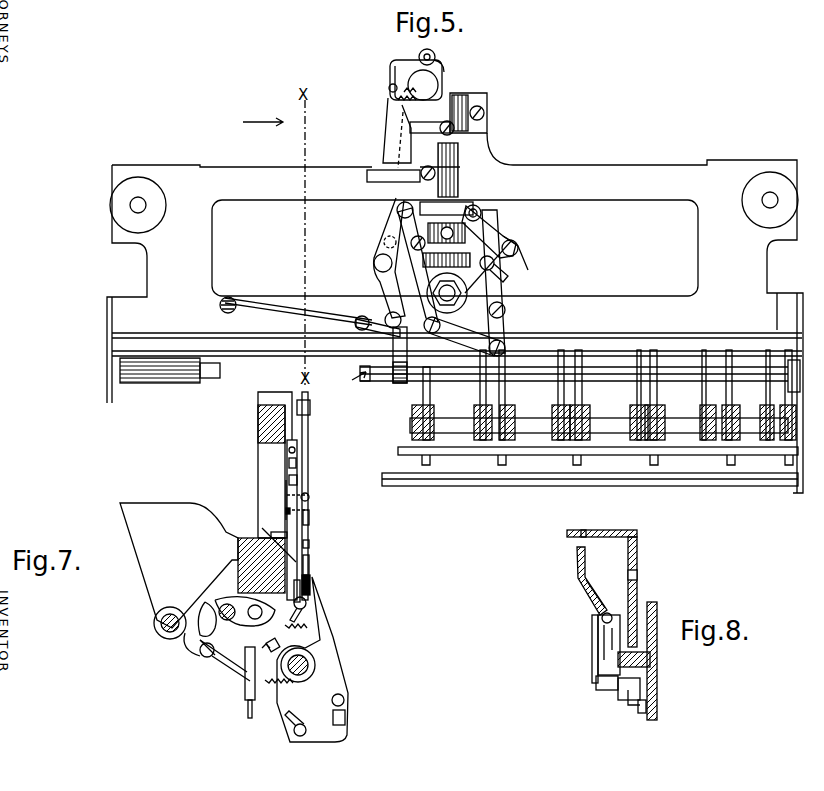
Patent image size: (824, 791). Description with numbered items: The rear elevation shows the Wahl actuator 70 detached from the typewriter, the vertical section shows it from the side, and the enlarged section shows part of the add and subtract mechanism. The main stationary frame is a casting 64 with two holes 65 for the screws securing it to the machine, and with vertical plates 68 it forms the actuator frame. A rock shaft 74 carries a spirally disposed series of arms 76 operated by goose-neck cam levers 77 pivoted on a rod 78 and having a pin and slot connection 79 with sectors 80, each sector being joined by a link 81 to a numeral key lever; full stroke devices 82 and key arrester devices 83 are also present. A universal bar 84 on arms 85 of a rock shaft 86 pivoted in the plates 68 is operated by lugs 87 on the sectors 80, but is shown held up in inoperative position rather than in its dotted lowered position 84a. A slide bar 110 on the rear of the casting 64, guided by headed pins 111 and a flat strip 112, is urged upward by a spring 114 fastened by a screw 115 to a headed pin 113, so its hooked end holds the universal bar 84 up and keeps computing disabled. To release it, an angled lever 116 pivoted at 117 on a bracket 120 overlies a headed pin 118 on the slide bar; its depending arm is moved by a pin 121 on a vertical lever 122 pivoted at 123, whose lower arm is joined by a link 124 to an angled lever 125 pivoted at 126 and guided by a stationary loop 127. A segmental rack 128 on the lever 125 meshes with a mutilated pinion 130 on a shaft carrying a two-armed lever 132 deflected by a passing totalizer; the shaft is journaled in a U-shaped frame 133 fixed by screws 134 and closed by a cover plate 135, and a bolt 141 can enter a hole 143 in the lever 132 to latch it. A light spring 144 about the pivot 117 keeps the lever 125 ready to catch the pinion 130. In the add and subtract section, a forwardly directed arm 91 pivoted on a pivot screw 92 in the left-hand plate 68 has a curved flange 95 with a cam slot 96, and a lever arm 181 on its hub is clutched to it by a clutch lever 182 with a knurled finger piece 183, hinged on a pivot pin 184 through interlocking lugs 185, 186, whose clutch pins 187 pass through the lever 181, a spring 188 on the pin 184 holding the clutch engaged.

In FIG. 5, the casting 64 is at (668, 197).
In FIG. 7, the casting 64 is at (258, 458).
In FIG. 5, the holes 65 is at (138, 197).
In FIG. 5, the vertical plates 68 is at (108, 395).
In FIG. 7, the vertical plates 68 is at (338, 660).
In FIG. 8, the vertical plates 68 is at (656, 685).
In FIG. 7, the Wahl actuator 70 is at (132, 560).
In FIG. 7, the rock shaft 74 is at (165, 640).
In FIG. 7, the arms 76 is at (192, 645).
In FIG. 5, the goose-neck cam levers 77 is at (481, 395).
In FIG. 7, the goose-neck cam levers 77 is at (218, 652).
In FIG. 7, the rod 78 is at (302, 655).
In FIG. 5, the pin and slot connection 79 is at (657, 410).
In FIG. 7, the pin and slot connection 79 is at (276, 646).
In FIG. 5, the sectors 80 is at (430, 390).
In FIG. 7, the sectors 80 is at (286, 634).
In FIG. 7, the link 81 is at (247, 708).
In FIG. 7, the full stroke devices 82 is at (276, 730).
In FIG. 7, the key arrester devices 83 is at (344, 702).
In FIG. 5, the universal bar 84 is at (368, 382).
In FIG. 7, the universal bar 84 is at (257, 670).
In FIG. 7, the arms 85 is at (245, 611).
In FIG. 5, the rock shaft 86 is at (350, 379).
In FIG. 7, the rock shaft 86 is at (209, 628).
In FIG. 7, the lugs 87 is at (292, 590).
In FIG. 8, the forwardly directed arm 91 is at (641, 714).
In FIG. 8, the pivot screw 92 is at (652, 660).
In FIG. 8, the curved flange 95 is at (610, 530).
In FIG. 8, the cam slot 96 is at (584, 537).
In FIG. 5, the slide bar 110 is at (406, 388).
In FIG. 7, the slide bar 110 is at (286, 512).
In FIG. 5, the headed pins or screws 111 is at (407, 286).
In FIG. 7, the headed pins or screws 111 is at (286, 484).
In FIG. 5, the flat strip of sheet metal 112 is at (386, 331).
In FIG. 7, the flat strip of sheet metal 112 is at (266, 539).
In FIG. 5, the headed pin 113 is at (415, 265).
In FIG. 7, the headed pin 113 is at (301, 520).
In FIG. 5, the spring 114 is at (315, 307).
In FIG. 7, the spring 114 is at (287, 538).
In FIG. 5, the screw 115 is at (226, 312).
In FIG. 5, the angled lever 116 is at (535, 252).
In FIG. 7, the angled lever 116 is at (295, 449).
In FIG. 5, the pivot 117 is at (476, 204).
In FIG. 7, the pivot 117 is at (297, 478).
In FIG. 5, the headed pin 118 is at (400, 204).
In FIG. 7, the headed pin 118 is at (296, 462).
In FIG. 5, the bracket 120 is at (502, 230).
In FIG. 5, the pin 121 is at (518, 247).
In FIG. 7, the pin 121 is at (309, 497).
In FIG. 5, the vertical lever 122 is at (503, 292).
In FIG. 7, the vertical lever 122 is at (311, 585).
In FIG. 5, the pivot 123 is at (500, 316).
In FIG. 7, the pivot 123 is at (309, 543).
In FIG. 5, the link 124 is at (458, 332).
In FIG. 7, the link 124 is at (309, 562).
In FIG. 5, the angled lever 125 is at (378, 214).
In FIG. 7, the angled lever 125 is at (308, 430).
In FIG. 5, the pivot 126 is at (383, 273).
In FIG. 5, the stationary loop 127 is at (378, 168).
In FIG. 7, the stationary loop 127 is at (308, 408).
In FIG. 5, the segmental rack 128 is at (392, 106).
In FIG. 5, the mutilated pinion 130 is at (392, 72).
In FIG. 5, the two-armed lever 132 is at (440, 60).
In FIG. 5, the U-shaped frame 133 is at (473, 100).
In FIG. 5, the screws 134 is at (420, 140).
In FIG. 5, the cover plate 135 is at (400, 64).
In FIG. 5, the bolt 141 is at (389, 89).
In FIG. 5, the hole 143 is at (438, 49).
In FIG. 5, the light spring 144 is at (460, 186).
In FIG. 8, the lever arm 181 is at (620, 698).
In FIG. 8, the clutch lever 182 is at (598, 598).
In FIG. 8, the knurled finger piece 183 is at (578, 559).
In FIG. 8, the pivot pin 184 is at (611, 645).
In FIG. 8, the lug 185 is at (592, 620).
In FIG. 8, the lug 186 is at (636, 603).
In FIG. 8, the clutch pins 187 is at (606, 684).
In FIG. 8, the spring 188 is at (586, 588).
In FIG. 7, the dotted line position of universal bar a is at (266, 643).